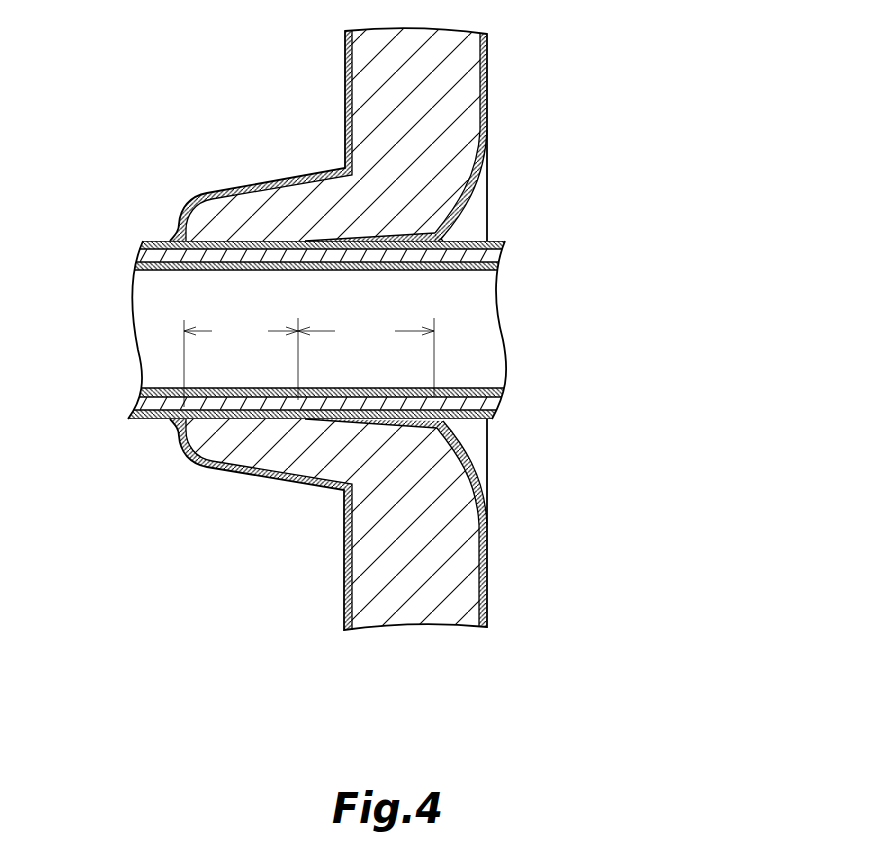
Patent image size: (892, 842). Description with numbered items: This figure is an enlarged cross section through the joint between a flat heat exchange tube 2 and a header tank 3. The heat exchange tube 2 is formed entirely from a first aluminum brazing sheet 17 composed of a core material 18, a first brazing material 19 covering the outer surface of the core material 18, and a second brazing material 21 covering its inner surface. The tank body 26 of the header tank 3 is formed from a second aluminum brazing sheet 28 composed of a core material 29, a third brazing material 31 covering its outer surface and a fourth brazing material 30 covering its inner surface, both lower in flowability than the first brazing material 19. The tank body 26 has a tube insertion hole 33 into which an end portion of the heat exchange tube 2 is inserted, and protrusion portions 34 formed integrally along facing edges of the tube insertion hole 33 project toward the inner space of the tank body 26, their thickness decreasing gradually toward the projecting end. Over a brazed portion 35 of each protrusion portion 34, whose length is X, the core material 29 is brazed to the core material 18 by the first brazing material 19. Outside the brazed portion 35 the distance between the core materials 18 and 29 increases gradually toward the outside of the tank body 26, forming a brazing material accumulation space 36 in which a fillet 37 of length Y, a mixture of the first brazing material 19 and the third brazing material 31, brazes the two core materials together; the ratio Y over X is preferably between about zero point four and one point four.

The heat exchange tube 2 is at (320, 319).
The header tank 3 is at (390, 557).
The first aluminum brazing sheet 17 is at (490, 403).
The core material 18 is at (130, 403).
The first brazing material 19 is at (500, 241).
The second brazing material 21 is at (153, 390).
The tank body 26 is at (434, 617).
The second aluminum brazing sheet 28 is at (488, 617).
The core material 29 is at (450, 67).
The fourth brazing material 30 is at (344, 575).
The third brazing material 31 is at (487, 578).
The tube insertion hole 33 is at (467, 455).
The protrusion portion 34 is at (262, 207).
The brazed portion 35 is at (208, 465).
The brazing material accumulation space 36 is at (347, 233).
The fillet 37 is at (435, 232).